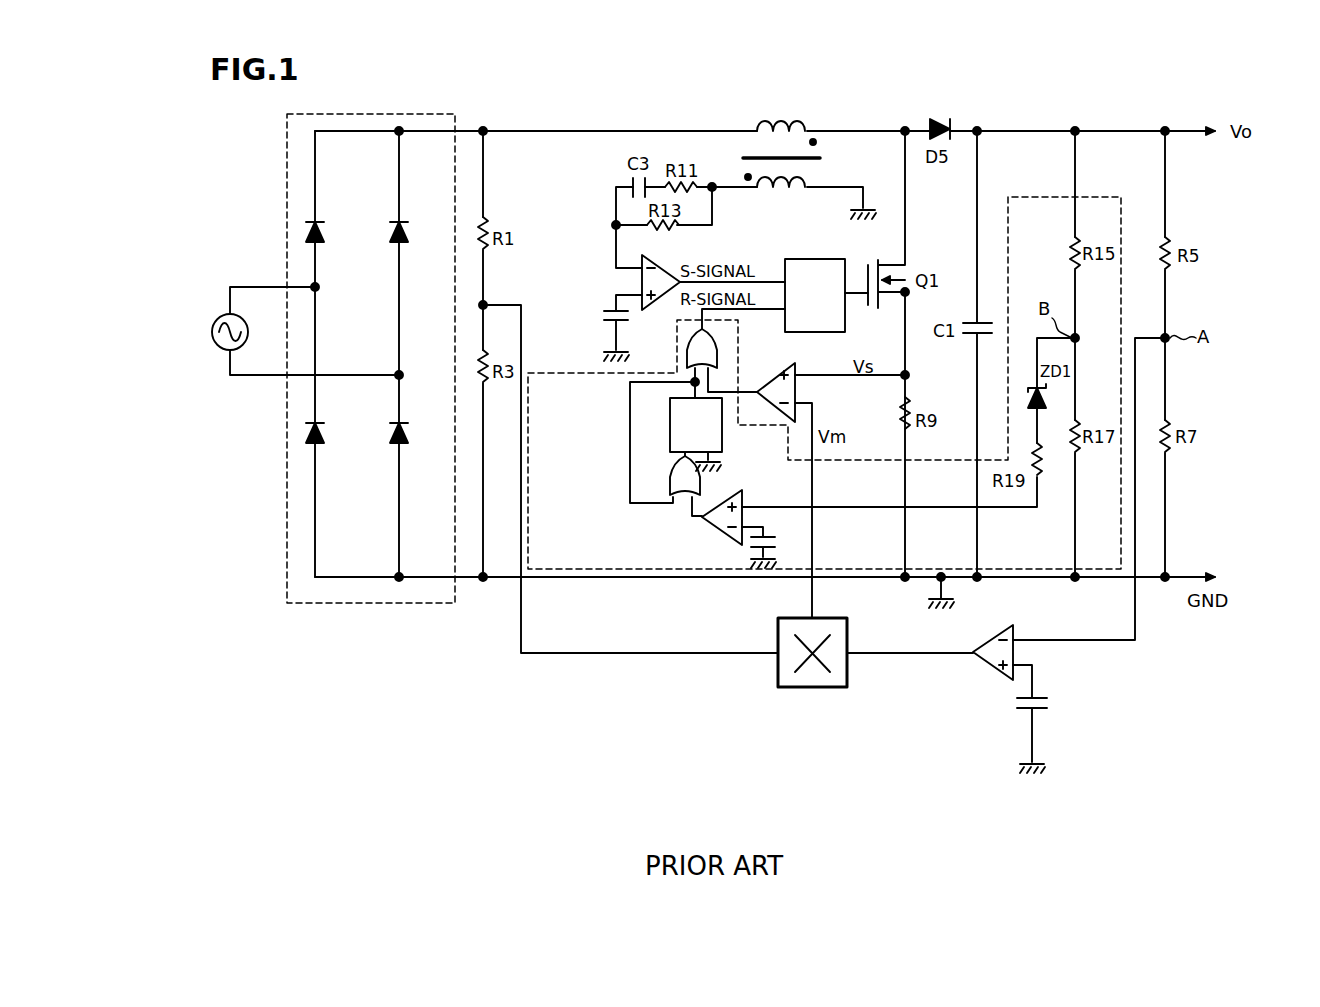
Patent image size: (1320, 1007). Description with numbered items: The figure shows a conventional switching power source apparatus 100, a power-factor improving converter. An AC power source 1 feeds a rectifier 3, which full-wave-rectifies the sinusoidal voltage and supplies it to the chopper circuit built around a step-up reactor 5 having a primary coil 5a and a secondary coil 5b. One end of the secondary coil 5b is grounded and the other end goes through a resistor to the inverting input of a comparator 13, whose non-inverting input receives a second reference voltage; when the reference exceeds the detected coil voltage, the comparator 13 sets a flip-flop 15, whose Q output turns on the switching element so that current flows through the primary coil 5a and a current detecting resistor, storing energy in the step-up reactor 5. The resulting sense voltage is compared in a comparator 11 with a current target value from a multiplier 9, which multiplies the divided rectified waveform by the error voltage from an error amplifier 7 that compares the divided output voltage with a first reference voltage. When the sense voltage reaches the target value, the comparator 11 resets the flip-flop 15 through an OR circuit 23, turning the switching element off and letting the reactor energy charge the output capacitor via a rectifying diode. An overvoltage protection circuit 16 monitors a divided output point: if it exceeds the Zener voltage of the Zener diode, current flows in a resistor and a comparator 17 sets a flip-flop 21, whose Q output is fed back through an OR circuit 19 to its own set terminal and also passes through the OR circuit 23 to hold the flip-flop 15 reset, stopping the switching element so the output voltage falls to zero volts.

The AC power source 1 is at (219, 313).
The rectifier 3 is at (370, 114).
The step-up reactor 5 is at (801, 152).
The primary coil 5a is at (777, 120).
The secondary coil 5b is at (770, 200).
The error amplifier 7 is at (986, 661).
The multiplier 9 is at (812, 688).
The comparator 11 is at (802, 372).
The comparator 13 is at (658, 264).
The flip-flop 15 is at (808, 260).
The overvoltage protection circuit 16 is at (875, 457).
The comparator 17 is at (718, 535).
The OR circuit 19 is at (668, 479).
The flip-flop 21 is at (722, 438).
The OR circuit 23 is at (718, 340).
The switching power source apparatus 100 is at (1285, 90).